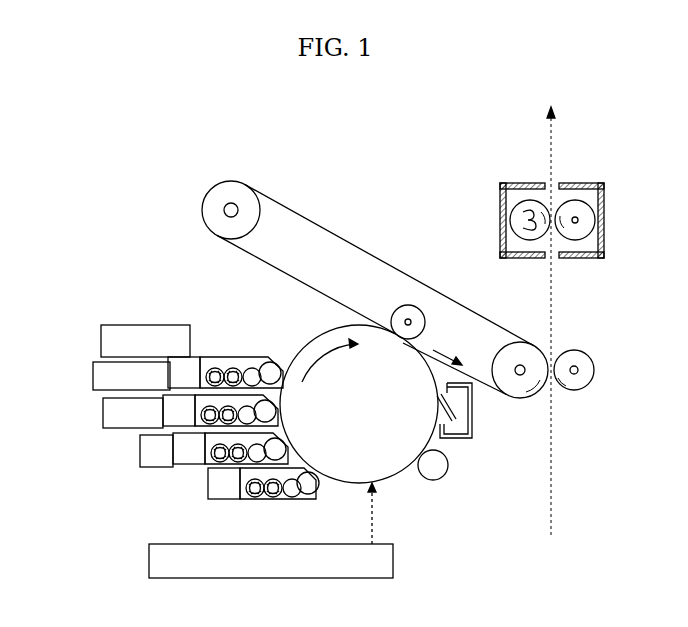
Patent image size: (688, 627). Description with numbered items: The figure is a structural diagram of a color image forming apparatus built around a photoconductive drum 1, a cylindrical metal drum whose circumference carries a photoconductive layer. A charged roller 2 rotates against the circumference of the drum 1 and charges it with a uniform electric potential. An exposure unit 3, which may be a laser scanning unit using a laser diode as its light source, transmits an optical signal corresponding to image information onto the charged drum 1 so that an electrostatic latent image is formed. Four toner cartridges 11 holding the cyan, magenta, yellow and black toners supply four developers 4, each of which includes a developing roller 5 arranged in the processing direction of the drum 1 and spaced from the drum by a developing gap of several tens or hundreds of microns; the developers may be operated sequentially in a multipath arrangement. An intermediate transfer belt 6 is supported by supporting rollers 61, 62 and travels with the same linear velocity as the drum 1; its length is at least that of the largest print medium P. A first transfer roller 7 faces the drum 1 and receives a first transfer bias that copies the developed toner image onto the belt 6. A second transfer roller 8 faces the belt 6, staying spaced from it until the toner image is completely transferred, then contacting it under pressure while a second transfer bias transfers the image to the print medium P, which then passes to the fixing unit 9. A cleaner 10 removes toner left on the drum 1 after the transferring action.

The photoconductive drum 1 is at (303, 342).
The charged roller 2 is at (446, 474).
The exposure unit 3 is at (149, 561).
The developing cartridge 4 is at (186, 370).
The developing roller 5 is at (316, 478).
The intermediate transfer belt 6 is at (313, 220).
The supporting roller 61 is at (208, 206).
The supporting roller 62 is at (513, 356).
The first transfer roller 7 is at (414, 306).
The second transfer roller 8 is at (595, 369).
The fixing unit 9 is at (600, 218).
The cleaner 10 is at (475, 424).
The toner cartridge 11 is at (101, 345).
The print medium P is at (558, 143).